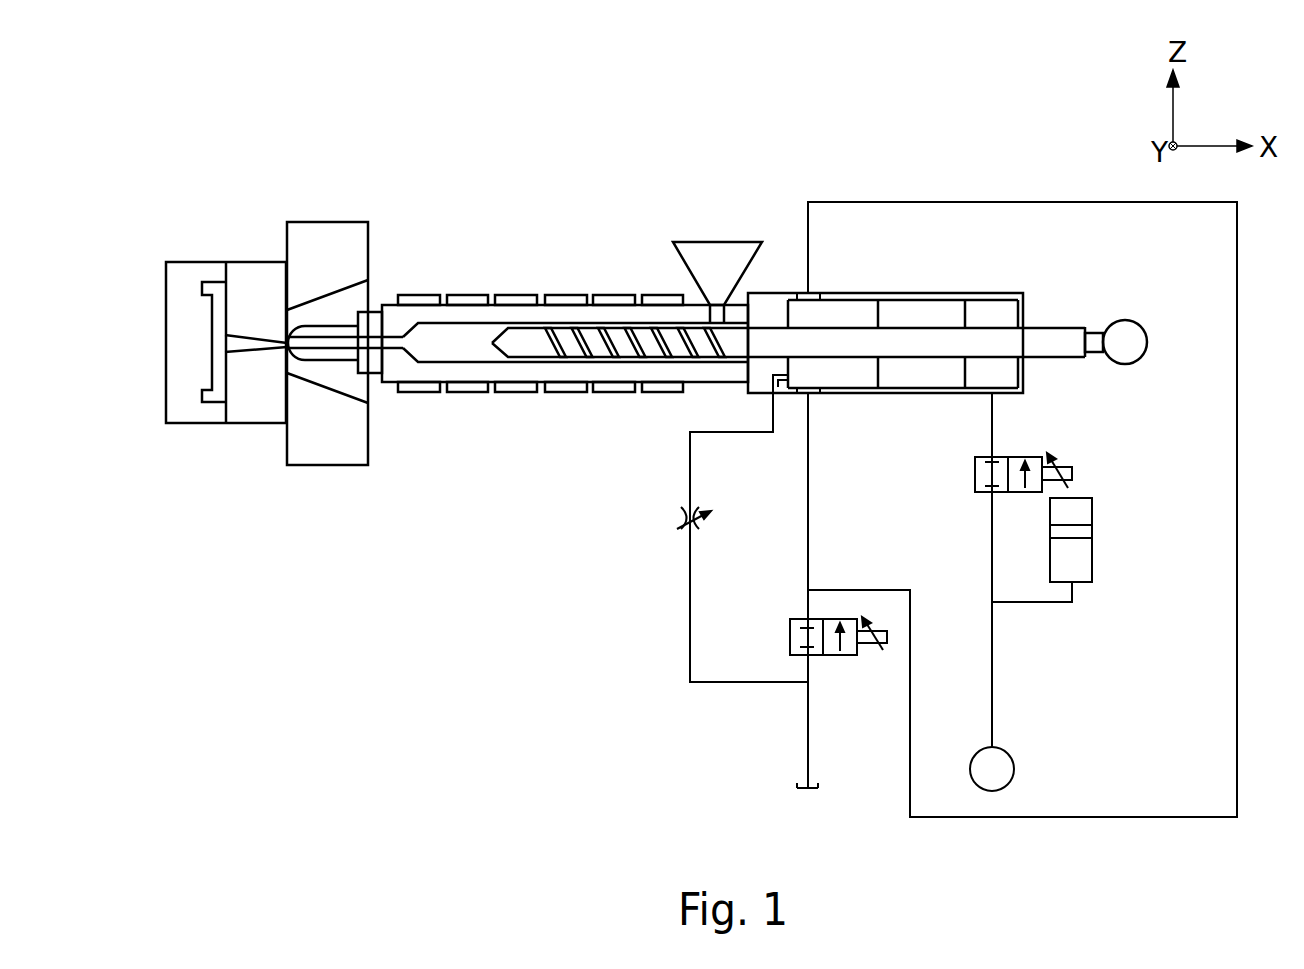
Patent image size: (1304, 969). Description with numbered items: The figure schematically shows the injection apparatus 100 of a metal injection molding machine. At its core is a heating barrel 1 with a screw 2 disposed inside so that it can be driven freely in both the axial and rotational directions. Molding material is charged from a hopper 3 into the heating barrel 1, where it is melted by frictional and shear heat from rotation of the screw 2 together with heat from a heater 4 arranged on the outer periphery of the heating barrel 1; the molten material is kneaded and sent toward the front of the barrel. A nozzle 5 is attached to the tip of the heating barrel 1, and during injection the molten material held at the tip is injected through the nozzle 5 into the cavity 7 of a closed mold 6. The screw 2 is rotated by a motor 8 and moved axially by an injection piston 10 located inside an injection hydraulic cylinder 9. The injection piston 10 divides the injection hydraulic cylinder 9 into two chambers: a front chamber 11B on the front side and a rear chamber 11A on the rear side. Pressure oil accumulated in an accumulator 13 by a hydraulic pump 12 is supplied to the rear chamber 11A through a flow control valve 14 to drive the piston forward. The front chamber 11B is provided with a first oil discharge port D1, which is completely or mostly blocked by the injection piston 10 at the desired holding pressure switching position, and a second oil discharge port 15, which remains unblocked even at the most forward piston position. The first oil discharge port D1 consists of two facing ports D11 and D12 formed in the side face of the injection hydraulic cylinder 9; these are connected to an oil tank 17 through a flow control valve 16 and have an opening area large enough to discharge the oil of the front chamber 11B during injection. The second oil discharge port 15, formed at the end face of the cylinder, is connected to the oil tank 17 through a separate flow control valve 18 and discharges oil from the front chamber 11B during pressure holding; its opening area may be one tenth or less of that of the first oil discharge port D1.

The injection apparatus 100 is at (692, 117).
The heating barrel 1 is at (427, 374).
The screw 2 is at (568, 353).
The hopper 3 is at (720, 245).
The heater 4 is at (472, 295).
The nozzle 5 is at (336, 324).
The mold 6 is at (180, 265).
The cavity 7 is at (213, 399).
The motor 8 is at (1128, 320).
The injection hydraulic cylinder 9 is at (1003, 297).
The injection piston 10 is at (917, 312).
The rear chamber 11A is at (1002, 377).
The front chamber 11B is at (867, 377).
The hydraulic pump 12 is at (1013, 763).
The accumulator 13 is at (1092, 552).
The flow control valve 14 is at (1072, 473).
The second oil discharge port 15 is at (781, 396).
The flow control valve 16 is at (797, 620).
The oil tank 17 is at (797, 788).
The flow control valve 18 is at (680, 520).
The first oil discharge port D1 is at (487, 627).
The first oil discharge port D11 is at (812, 395).
The first oil discharge port D12 is at (815, 293).